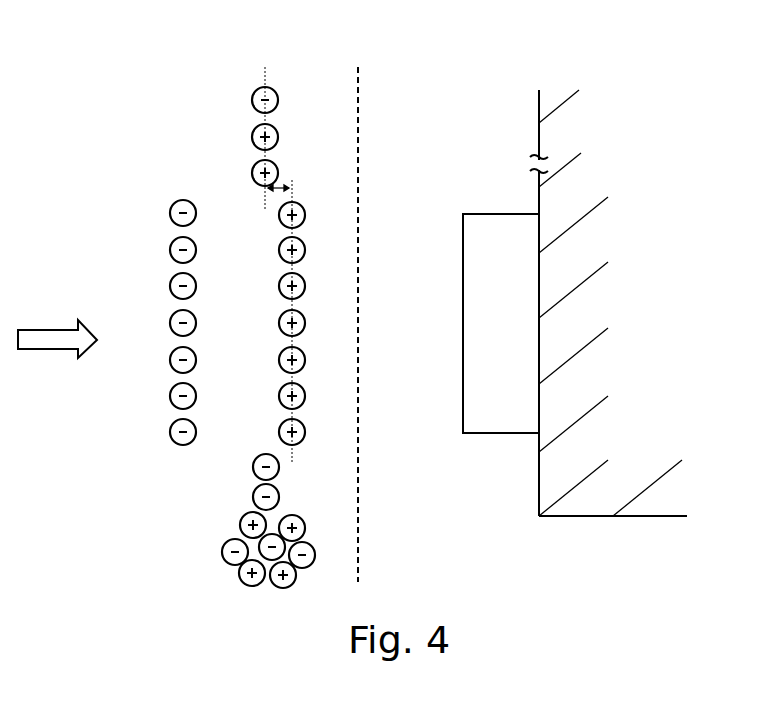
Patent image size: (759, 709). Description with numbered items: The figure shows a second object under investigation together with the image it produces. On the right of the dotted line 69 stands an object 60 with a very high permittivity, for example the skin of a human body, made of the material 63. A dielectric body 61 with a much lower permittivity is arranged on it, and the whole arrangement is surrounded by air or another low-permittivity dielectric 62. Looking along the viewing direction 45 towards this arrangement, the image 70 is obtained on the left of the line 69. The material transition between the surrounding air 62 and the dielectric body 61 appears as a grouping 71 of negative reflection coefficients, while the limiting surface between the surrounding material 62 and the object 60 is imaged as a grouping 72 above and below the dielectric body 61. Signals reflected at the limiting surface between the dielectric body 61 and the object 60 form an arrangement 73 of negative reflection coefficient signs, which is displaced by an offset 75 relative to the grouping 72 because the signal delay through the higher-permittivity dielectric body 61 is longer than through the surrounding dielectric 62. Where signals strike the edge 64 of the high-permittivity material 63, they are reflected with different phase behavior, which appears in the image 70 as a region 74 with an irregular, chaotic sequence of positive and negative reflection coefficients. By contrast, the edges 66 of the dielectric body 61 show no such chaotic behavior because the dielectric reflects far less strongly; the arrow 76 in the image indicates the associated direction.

The viewing direction 45 is at (52, 328).
The object 60 is at (644, 66).
The dielectric body 61 is at (463, 341).
The surrounding dielectric 62 is at (452, 154).
The material 63 is at (610, 303).
The edge 64 is at (556, 518).
The edges 66 is at (498, 434).
The dotted line 69 is at (360, 90).
The image 70 is at (280, 60).
The grouping of negative reflection coefficients 71 is at (170, 322).
The grouping 72 is at (252, 134).
The arrangement of negative reflection coefficient signs 73 is at (305, 435).
The region 74 is at (215, 572).
The offset 75 is at (290, 183).
The charge motion direction 76 is at (208, 452).